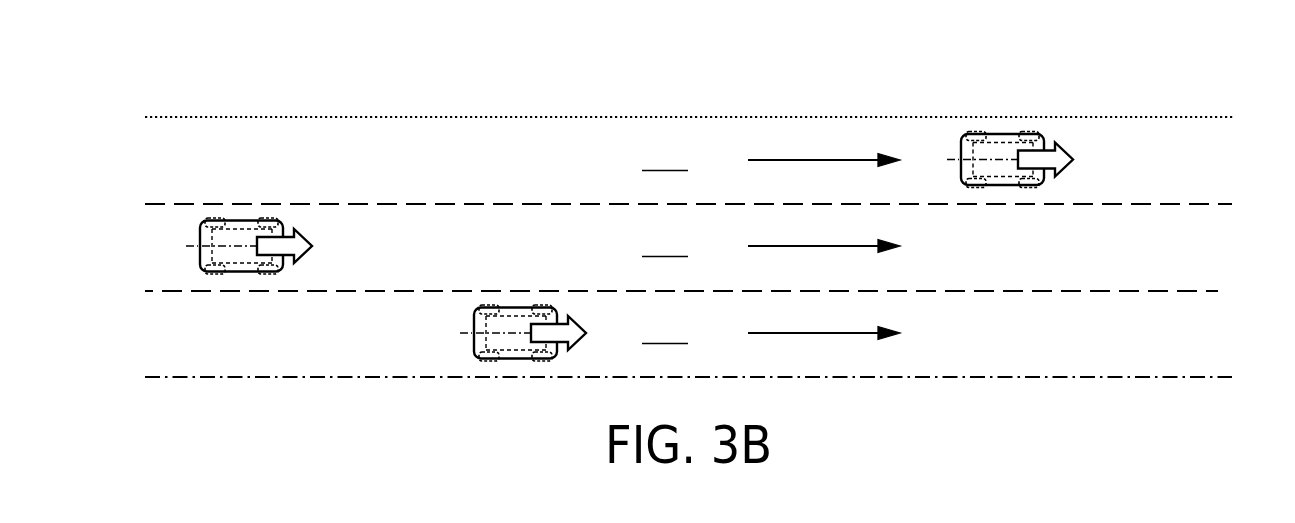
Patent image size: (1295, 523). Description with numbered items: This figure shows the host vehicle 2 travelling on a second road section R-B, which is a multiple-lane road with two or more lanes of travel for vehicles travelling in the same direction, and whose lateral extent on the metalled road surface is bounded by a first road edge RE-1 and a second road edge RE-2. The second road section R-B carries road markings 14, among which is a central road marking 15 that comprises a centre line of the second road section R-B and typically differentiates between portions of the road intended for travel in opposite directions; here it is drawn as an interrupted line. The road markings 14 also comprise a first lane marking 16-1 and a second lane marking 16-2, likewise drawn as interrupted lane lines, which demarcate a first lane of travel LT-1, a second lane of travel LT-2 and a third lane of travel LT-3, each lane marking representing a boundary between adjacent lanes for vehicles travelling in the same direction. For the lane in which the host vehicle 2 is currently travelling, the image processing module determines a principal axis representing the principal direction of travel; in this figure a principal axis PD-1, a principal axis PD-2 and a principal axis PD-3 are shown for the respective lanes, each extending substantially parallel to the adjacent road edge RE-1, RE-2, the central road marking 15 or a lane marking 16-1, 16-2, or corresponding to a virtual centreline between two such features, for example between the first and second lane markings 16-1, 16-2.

The host vehicle 2 is at (200, 253).
The road markings 14 is at (707, 230).
The central road marking 15 is at (701, 378).
The first lane marking 16-1 is at (1173, 204).
The second lane marking 16-2 is at (1222, 291).
The second road section R-B is at (1024, 101).
The first road edge RE-1 is at (1222, 117).
The second road edge RE-2 is at (1190, 377).
The first lane of travel LT-1 is at (157, 232).
The second lane of travel LT-2 is at (665, 245).
The third lane of travel LT-3 is at (665, 332).
The principal axis PD-1 is at (824, 149).
The principal axis PD-2 is at (824, 235).
The principal axis PD-3 is at (824, 322).